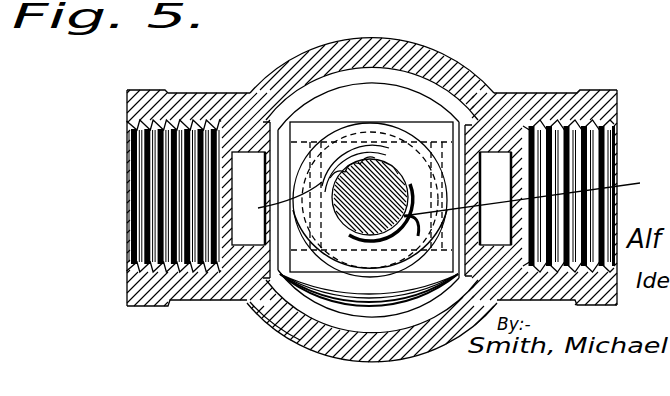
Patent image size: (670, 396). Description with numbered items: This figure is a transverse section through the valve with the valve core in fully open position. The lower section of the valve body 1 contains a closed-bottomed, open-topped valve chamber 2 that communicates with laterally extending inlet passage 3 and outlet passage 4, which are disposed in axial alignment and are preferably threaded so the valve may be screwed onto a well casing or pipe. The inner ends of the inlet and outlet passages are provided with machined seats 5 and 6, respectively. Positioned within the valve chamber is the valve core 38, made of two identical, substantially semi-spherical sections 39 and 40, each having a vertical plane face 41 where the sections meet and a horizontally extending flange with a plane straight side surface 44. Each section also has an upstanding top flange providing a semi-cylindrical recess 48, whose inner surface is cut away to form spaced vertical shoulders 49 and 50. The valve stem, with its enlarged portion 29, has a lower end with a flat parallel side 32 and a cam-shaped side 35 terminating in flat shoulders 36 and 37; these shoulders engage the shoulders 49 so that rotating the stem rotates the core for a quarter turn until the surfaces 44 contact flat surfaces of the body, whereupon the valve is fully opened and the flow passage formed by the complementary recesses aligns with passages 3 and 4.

The lower section of the valve body 1 is at (437, 110).
The valve chamber 2 is at (371, 68).
The inlet passage 3 is at (491, 167).
The outlet passage 4 is at (247, 175).
The machined seat 5 is at (486, 118).
The machined seat 6 is at (273, 147).
The enlarged portion of the valve stem 29 is at (370, 189).
The flat parallel side 32 is at (378, 243).
The cam-shaped side 35 is at (343, 168).
The flat shoulder 36 is at (398, 233).
The flat shoulder 37 is at (332, 152).
The valve core 38 is at (386, 97).
The semi-spherical valve core section 39 is at (456, 86).
The semi-spherical valve core section 40 is at (319, 303).
The vertical plane face 41 is at (277, 295).
The plane straight side surface 44 is at (413, 123).
The semi-cylindrical recess 48 is at (277, 201).
The vertical shoulder 49 is at (530, 204).
The vertical shoulder 50 is at (353, 318).